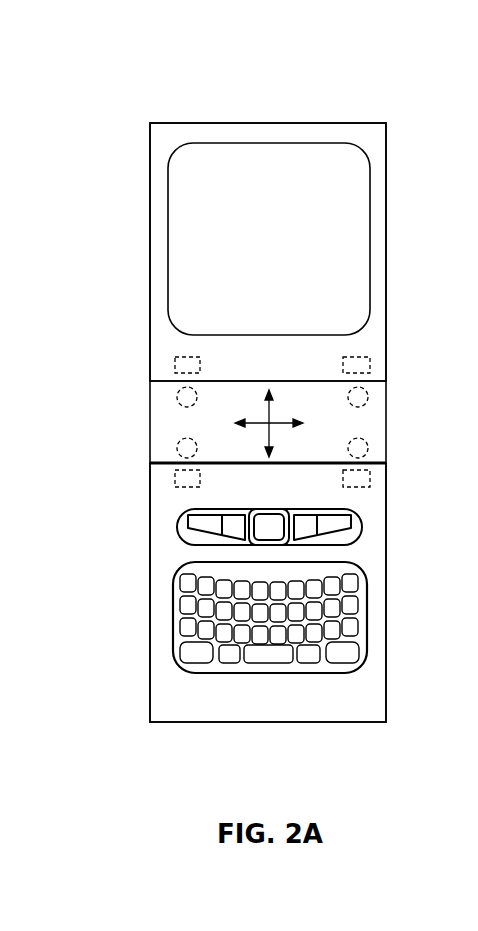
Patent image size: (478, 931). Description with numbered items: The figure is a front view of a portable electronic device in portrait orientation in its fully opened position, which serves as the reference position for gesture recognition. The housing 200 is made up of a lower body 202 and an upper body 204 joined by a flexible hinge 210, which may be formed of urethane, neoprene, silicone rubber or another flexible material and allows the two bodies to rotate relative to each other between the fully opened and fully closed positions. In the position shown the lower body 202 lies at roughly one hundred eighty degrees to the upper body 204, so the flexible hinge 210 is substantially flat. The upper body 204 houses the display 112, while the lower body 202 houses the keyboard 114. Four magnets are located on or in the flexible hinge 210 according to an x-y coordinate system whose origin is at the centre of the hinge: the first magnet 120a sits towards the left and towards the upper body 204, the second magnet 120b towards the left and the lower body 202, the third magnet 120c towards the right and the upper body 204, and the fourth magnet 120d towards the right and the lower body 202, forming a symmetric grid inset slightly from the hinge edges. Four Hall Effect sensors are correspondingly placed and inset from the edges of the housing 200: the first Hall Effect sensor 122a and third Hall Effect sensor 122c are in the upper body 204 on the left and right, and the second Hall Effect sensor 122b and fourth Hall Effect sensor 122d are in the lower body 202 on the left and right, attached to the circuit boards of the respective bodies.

The housing 200 is at (375, 123).
The upper body 204 is at (376, 246).
The lower body 202 is at (370, 678).
The display 112 is at (190, 155).
The keyboard 114 is at (188, 660).
The flexible hinge 210 is at (357, 423).
The first magnet 120a is at (180, 397).
The second magnet 120b is at (180, 448).
The third magnet 120c is at (360, 397).
The fourth magnet 120d is at (362, 448).
The first Hall Effect sensor 122a is at (186, 366).
The second Hall Effect sensor 122b is at (186, 478).
The third Hall Effect sensor 122c is at (363, 365).
The fourth Hall Effect sensor 122d is at (360, 480).